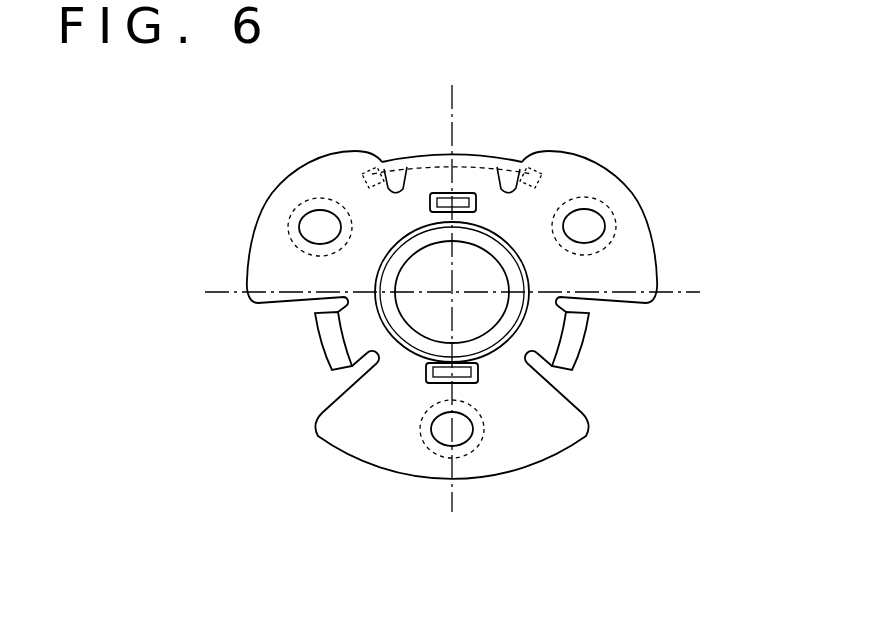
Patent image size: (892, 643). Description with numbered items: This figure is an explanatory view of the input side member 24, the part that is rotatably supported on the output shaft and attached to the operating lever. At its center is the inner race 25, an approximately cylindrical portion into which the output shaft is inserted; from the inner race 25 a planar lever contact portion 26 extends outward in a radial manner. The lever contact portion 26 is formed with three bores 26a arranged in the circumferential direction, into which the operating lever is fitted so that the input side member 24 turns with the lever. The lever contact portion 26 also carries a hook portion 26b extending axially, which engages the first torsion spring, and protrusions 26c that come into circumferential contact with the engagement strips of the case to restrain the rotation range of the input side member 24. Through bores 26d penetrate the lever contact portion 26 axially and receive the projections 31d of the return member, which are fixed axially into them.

The input side member 24 is at (478, 307).
The inner race 25 is at (404, 310).
The lever contact portion 26 is at (314, 170).
The bores 26a is at (310, 232).
The hook portion 26b is at (472, 153).
The protrusions 26c is at (318, 341).
The through bores 26d is at (430, 204).
The projections 31d is at (474, 204).